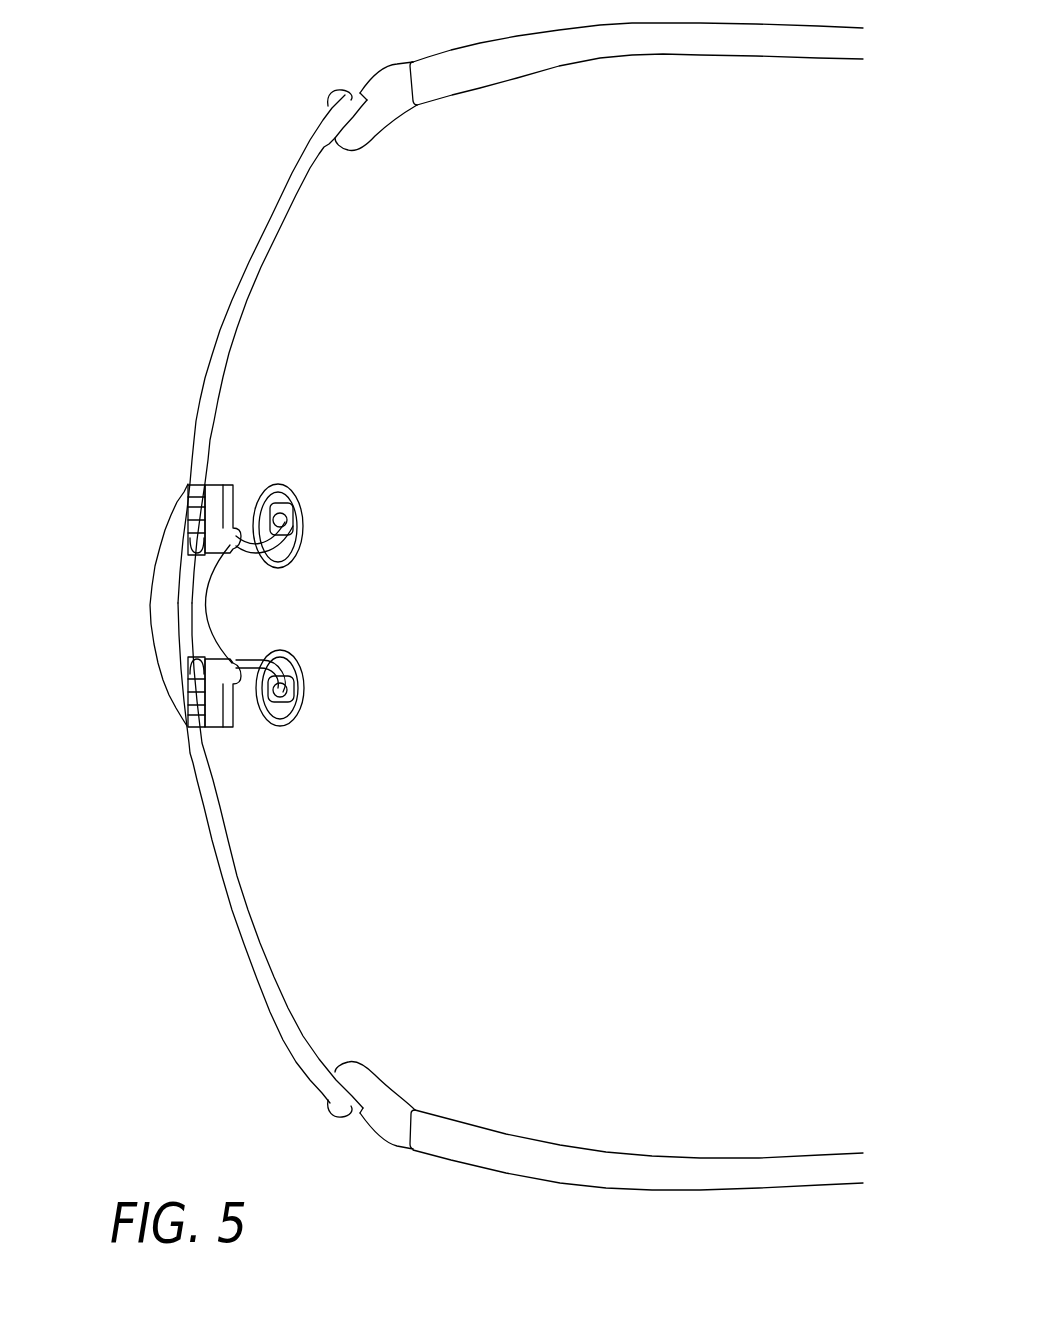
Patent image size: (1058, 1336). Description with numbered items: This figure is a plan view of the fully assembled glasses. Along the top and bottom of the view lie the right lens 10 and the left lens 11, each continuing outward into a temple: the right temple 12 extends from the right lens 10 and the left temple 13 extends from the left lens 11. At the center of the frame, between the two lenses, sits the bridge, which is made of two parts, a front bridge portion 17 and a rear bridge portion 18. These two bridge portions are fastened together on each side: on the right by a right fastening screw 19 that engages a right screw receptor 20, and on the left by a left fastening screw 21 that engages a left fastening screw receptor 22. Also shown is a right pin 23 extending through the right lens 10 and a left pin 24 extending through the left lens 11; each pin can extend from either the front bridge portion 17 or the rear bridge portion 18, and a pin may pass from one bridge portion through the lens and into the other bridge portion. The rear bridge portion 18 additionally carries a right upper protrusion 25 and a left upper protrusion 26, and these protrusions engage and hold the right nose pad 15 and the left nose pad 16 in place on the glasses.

The right lens 10 is at (232, 323).
The left lens 11 is at (237, 910).
The right temple 12 is at (623, 40).
The left temple 13 is at (537, 1157).
The right nose pad 15 is at (283, 512).
The left nose pad 16 is at (293, 693).
The front bridge portion 17 is at (168, 603).
The rear bridge portion 18 is at (195, 593).
The right fastening screw 19 is at (240, 490).
The right screw receptor 20 is at (192, 498).
The left fastening screw 21 is at (242, 722).
The left fastening screw receptor 22 is at (193, 717).
The right pin 23 is at (193, 533).
The left pin 24 is at (193, 678).
The right upper protrusion 25 is at (237, 535).
The left upper protrusion 26 is at (233, 667).